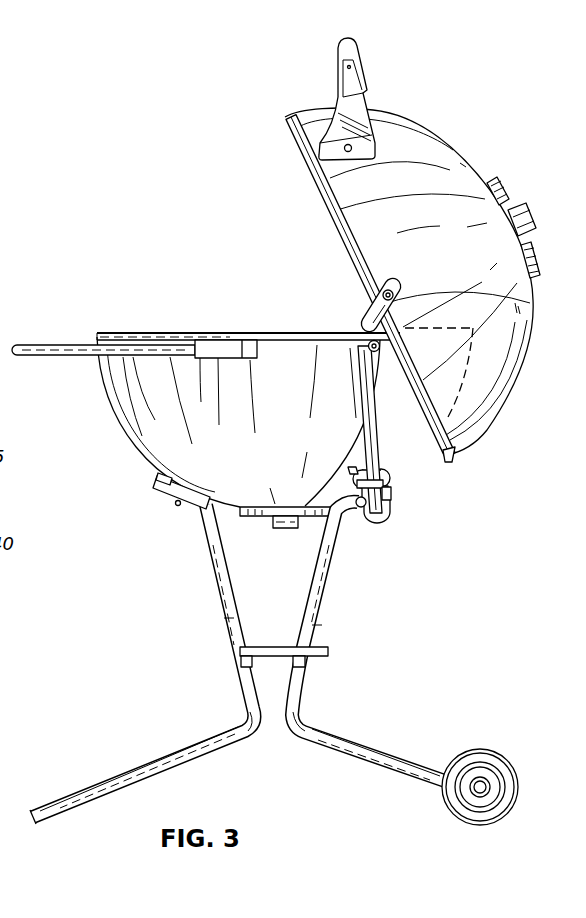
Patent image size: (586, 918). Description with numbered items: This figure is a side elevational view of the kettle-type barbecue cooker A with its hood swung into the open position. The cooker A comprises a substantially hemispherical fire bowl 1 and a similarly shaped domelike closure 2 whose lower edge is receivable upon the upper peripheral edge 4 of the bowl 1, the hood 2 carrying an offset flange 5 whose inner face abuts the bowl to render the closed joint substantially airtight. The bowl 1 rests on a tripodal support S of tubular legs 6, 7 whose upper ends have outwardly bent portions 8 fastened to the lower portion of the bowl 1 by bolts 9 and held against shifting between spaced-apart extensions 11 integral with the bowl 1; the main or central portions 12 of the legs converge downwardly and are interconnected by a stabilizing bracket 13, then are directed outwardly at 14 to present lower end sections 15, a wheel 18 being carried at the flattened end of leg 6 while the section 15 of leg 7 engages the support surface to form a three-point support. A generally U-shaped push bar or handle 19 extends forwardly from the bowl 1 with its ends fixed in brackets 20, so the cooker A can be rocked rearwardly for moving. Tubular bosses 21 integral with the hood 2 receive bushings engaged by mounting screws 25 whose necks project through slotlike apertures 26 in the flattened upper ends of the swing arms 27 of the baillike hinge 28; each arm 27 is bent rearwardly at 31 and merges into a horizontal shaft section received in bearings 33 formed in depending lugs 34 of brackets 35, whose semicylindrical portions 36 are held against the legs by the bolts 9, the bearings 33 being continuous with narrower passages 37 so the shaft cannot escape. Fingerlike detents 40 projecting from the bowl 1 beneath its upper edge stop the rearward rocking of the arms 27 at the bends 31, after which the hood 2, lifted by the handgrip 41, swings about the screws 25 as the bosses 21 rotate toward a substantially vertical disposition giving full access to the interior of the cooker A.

The fire bowl 1 is at (130, 428).
The closure 2 is at (427, 127).
The upper peripheral edge 4 is at (134, 350).
The offset flange 5 is at (298, 142).
The leg 6 is at (320, 597).
The leg 7 is at (222, 596).
The outwardly bent portion 8 is at (155, 486).
The bolt 9 is at (175, 505).
The extension 11 is at (157, 480).
The main or central portion 12 is at (227, 622).
The stabilizing bracket 13 is at (328, 648).
The outwardly directed portion 14 is at (243, 717).
The lower end section 15 is at (160, 758).
The wheel 18 is at (500, 816).
The push bar or handle 19 is at (22, 356).
The bracket 20 is at (195, 349).
The tubular boss 21 is at (530, 303).
The mounting screw 25 is at (377, 283).
The slotlike aperture 26 is at (377, 303).
The swing arm 27 is at (383, 413).
The baillike hinge 28 is at (448, 447).
The bend 31 is at (360, 337).
The bearing 33 is at (383, 520).
The depending lug 34 is at (391, 494).
The bracket 35 is at (390, 517).
The semicylindrical portion 36 is at (390, 480).
The passage 37 is at (388, 508).
The fingerlike detent 40 is at (381, 343).
The handgrip 41 is at (356, 50).
The barbecue cooker A is at (406, 239).
The tripodal support S is at (287, 677).